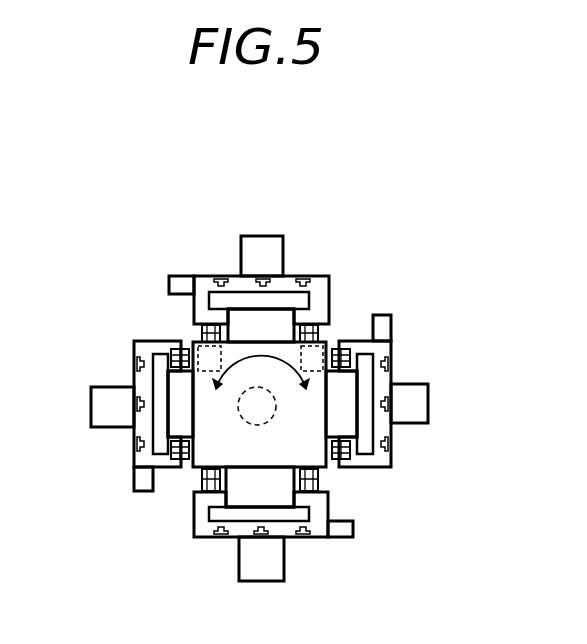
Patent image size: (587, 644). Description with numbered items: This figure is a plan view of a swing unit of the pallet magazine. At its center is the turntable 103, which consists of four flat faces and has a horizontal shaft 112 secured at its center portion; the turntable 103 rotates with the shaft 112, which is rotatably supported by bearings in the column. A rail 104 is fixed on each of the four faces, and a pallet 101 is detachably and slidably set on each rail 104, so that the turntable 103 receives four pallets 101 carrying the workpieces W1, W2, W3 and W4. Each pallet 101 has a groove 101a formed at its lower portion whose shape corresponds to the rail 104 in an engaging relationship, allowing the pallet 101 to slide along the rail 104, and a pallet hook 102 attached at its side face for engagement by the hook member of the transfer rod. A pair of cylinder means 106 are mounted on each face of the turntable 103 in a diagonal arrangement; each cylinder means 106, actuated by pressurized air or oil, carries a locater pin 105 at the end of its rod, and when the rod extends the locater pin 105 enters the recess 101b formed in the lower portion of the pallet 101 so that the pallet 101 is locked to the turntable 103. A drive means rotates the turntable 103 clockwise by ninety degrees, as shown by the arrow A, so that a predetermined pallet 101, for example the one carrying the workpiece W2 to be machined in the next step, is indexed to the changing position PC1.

The pallet 101 is at (413, 485).
The groove 101a is at (238, 298).
The recess 101b is at (205, 318).
The pallet hook 102 is at (177, 280).
The turntable 103 is at (317, 458).
The rail 104 is at (282, 300).
The locater pin 105 is at (336, 343).
The cylinder means 106 is at (279, 406).
The horizontal shaft 112 is at (245, 428).
The arrow A is at (261, 389).
The changing position PC1 is at (334, 257).
The workpiece W1 is at (244, 236).
The workpiece W2 is at (106, 388).
The workpiece W3 is at (282, 565).
The workpiece W4 is at (424, 384).